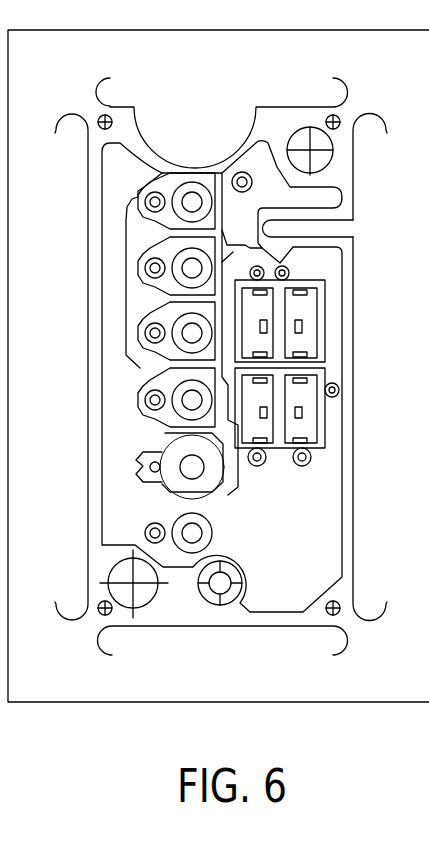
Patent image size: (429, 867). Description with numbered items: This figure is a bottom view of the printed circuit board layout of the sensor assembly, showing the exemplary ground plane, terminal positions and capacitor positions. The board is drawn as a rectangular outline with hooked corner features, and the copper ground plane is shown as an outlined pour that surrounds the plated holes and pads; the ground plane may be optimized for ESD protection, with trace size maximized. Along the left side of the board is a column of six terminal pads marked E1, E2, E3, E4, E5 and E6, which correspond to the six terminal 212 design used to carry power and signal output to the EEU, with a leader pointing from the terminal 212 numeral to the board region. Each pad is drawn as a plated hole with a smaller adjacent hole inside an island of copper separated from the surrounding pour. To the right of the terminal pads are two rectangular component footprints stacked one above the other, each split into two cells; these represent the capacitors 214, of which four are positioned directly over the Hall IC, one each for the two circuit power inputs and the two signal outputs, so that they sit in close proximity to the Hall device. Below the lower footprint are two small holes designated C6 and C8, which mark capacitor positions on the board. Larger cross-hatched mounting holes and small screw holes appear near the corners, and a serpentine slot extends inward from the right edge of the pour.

The terminal 212 is at (120, 468).
The capacitors 214 is at (312, 398).
The terminal pad E1 is at (169, 196).
The terminal pad E2 is at (176, 257).
The terminal pad E3 is at (176, 325).
The terminal pad E4 is at (176, 395).
The terminal pad E5 is at (180, 462).
The terminal pad E6 is at (176, 524).
The capacitor C6 is at (256, 473).
The capacitor C8 is at (302, 473).